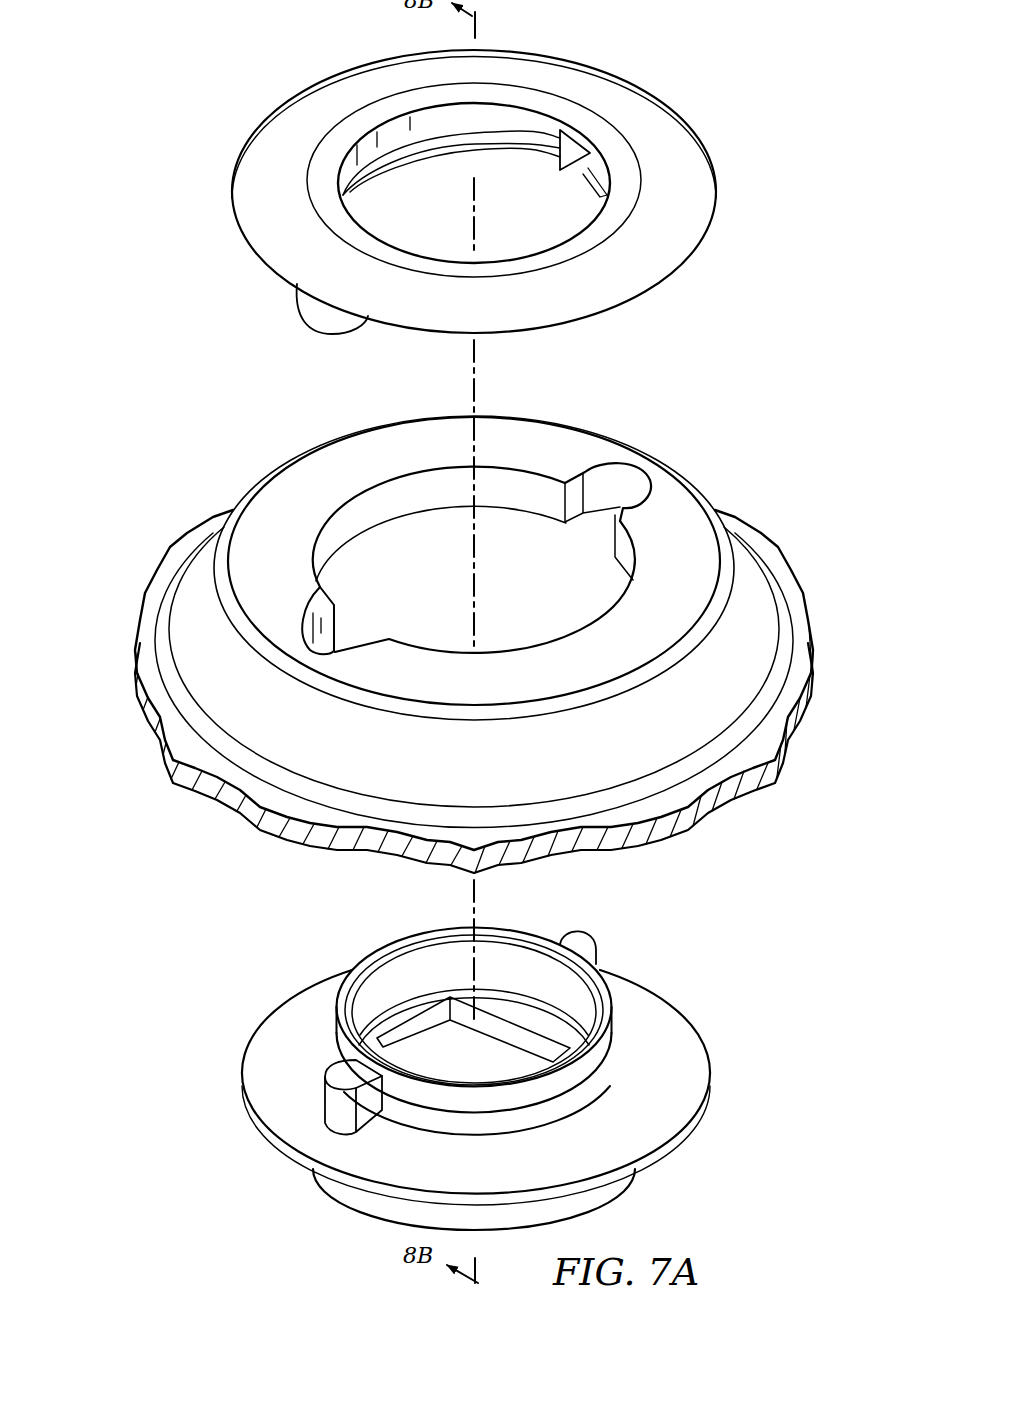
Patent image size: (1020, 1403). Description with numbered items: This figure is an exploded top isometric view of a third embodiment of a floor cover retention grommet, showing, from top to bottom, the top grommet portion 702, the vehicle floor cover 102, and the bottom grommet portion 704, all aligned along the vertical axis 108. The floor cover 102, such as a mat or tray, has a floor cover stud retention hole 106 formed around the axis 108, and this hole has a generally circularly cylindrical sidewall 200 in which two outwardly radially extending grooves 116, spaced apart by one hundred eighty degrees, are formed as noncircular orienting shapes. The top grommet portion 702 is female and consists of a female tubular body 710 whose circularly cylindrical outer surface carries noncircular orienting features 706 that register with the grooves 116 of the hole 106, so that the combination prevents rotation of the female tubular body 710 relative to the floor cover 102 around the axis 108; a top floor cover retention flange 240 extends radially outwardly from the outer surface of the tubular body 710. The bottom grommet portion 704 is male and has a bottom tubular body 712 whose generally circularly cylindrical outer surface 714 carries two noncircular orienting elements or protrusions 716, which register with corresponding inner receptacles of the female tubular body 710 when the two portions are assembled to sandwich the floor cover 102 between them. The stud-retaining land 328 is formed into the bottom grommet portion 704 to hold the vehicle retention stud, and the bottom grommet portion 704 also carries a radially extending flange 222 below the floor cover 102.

The vehicle floor cover 102 is at (111, 631).
The floor cover stud retention hole 106 is at (447, 585).
The vertical axis 108 is at (483, 396).
The outwardly laterally radially extending grooves 116 is at (628, 485).
The circularly cylindrical sidewall 200 is at (413, 490).
The flange 222 is at (282, 1013).
The top floor cover retention flange 240 is at (298, 115).
The stud-retaining land 328 is at (560, 1023).
The top grommet portion 702 is at (204, 169).
The bottom grommet portion 704 is at (210, 1089).
The noncircular orienting features 706 is at (300, 313).
The female tubular body 710 is at (507, 123).
The bottom tubular body 712 is at (575, 1099).
The circularly cylindrical outer surface 714 is at (353, 963).
The noncircular orienting elements or protrusions 716 is at (330, 1113).